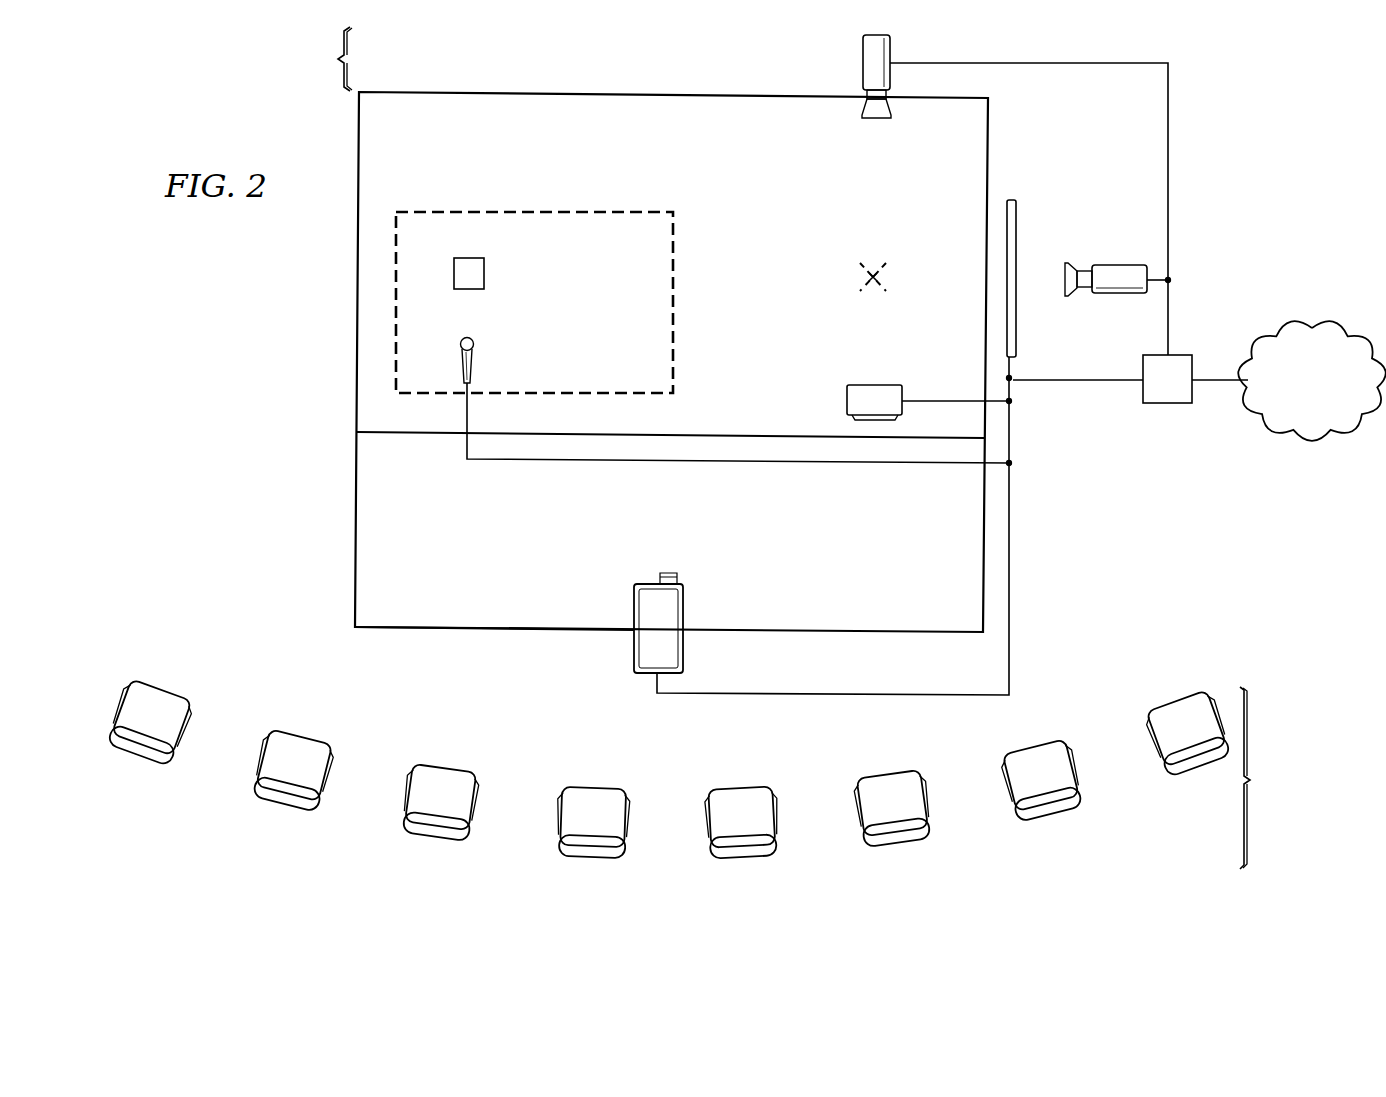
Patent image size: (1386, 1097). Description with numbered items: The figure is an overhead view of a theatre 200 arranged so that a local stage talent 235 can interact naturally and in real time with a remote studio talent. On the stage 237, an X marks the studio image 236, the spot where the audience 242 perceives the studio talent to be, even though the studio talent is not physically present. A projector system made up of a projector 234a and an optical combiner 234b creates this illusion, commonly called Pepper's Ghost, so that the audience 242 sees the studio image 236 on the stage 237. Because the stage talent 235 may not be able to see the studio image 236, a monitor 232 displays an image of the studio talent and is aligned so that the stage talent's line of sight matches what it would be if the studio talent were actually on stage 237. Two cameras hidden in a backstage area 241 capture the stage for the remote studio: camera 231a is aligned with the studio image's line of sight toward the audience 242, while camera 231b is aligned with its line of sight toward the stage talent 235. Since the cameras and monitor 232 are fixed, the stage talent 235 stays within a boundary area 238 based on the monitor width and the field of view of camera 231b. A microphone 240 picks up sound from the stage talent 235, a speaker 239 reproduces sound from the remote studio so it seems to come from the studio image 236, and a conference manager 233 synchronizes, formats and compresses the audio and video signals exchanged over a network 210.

The theatre 200 is at (1237, 579).
The network 210 is at (1324, 325).
The camera 231a is at (862, 62).
The camera 231b is at (1128, 265).
The monitor 232 is at (1013, 200).
The conference manager 233 is at (1180, 405).
The projector 234a is at (634, 652).
The optical combiner 234b is at (482, 608).
The stage talent 235 is at (484, 275).
The studio image 236 is at (887, 266).
The stage 237 is at (357, 404).
The boundary area 238 is at (453, 206).
The speaker 239 is at (888, 385).
The microphone 240 is at (473, 345).
The backstage area 241 is at (325, 59).
The audience 242 is at (699, 782).